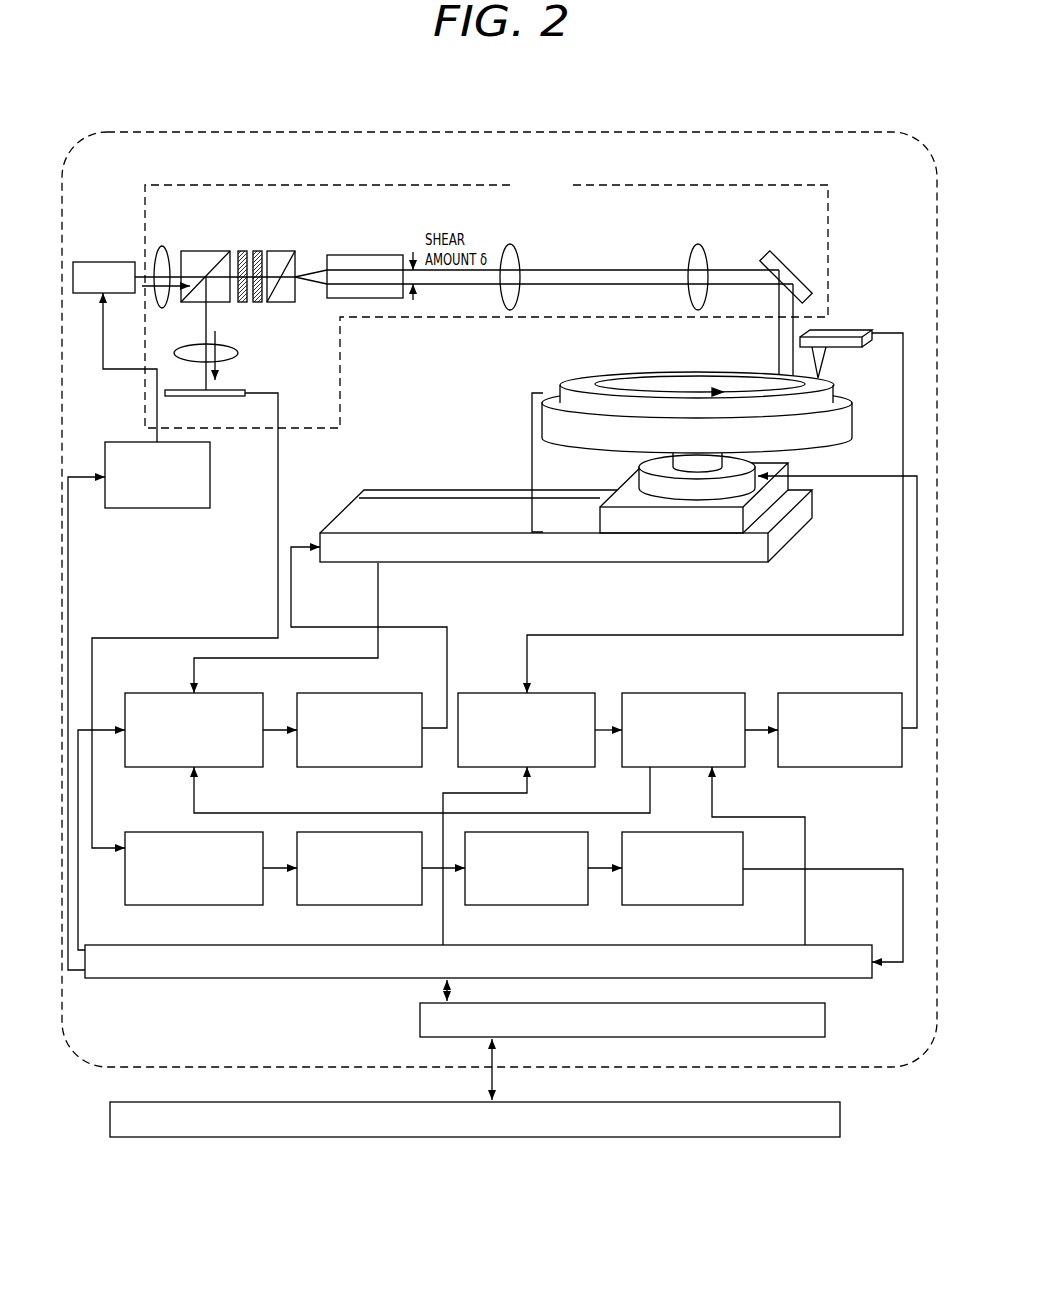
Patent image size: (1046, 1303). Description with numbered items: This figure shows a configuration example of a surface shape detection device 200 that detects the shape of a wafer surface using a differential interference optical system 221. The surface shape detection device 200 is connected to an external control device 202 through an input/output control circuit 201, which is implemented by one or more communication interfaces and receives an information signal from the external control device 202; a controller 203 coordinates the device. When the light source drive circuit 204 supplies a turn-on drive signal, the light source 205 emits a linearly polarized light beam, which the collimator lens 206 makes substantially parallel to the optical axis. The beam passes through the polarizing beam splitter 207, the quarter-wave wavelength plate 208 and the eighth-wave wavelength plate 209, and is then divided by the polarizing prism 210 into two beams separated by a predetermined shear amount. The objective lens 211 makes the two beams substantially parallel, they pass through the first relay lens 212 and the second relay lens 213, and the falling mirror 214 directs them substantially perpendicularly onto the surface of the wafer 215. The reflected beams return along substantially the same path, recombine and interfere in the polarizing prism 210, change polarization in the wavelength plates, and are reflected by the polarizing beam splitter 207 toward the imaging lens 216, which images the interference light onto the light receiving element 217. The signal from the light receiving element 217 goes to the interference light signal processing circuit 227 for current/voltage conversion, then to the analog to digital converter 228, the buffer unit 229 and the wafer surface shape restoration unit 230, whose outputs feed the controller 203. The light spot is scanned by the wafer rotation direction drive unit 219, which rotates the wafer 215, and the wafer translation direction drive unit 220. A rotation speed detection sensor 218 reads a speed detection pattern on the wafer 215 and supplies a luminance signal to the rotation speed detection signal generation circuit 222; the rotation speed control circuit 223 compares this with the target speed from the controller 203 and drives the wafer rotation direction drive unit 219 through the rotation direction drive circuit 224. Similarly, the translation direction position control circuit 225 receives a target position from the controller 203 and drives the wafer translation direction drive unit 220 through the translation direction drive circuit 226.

The surface shape detection device 200 is at (116, 130).
The input/output control circuit 201 is at (432, 1022).
The external control device 202 is at (823, 1115).
The controller 203 is at (142, 963).
The light source drive circuit 204 is at (167, 500).
The light source 205 is at (106, 260).
The collimator lens 206 is at (161, 248).
The polarizing beam splitter 207 is at (200, 250).
The λ/4 wavelength plate 208 is at (243, 250).
The λ/8 wavelength plate 209 is at (272, 250).
The polarizing prism 210 is at (283, 304).
The objective lens 211 is at (363, 300).
The first relay lens 212 is at (512, 310).
The second relay lens 213 is at (700, 310).
The falling mirror 214 is at (788, 254).
The wafer 215 is at (626, 373).
The imaging lens 216 is at (238, 356).
The light receiving element 217 is at (205, 396).
The rotation speed detection sensor 218 is at (850, 329).
The wafer rotation direction drive unit 219 is at (532, 462).
The wafer translation direction drive unit 220 is at (620, 563).
The differential interference optical system 221 is at (486, 301).
The rotation speed detection signal generation circuit 222 is at (584, 768).
The rotation speed control circuit 223 is at (735, 768).
The rotation direction drive circuit 224 is at (893, 768).
The translation direction position control circuit 225 is at (252, 768).
The translation direction drive circuit 226 is at (410, 768).
The interference light signal processing circuit 227 is at (252, 906).
The analog to digital converter 228 is at (410, 906).
The buffer unit 229 is at (578, 906).
The wafer surface shape restoration unit 230 is at (735, 906).